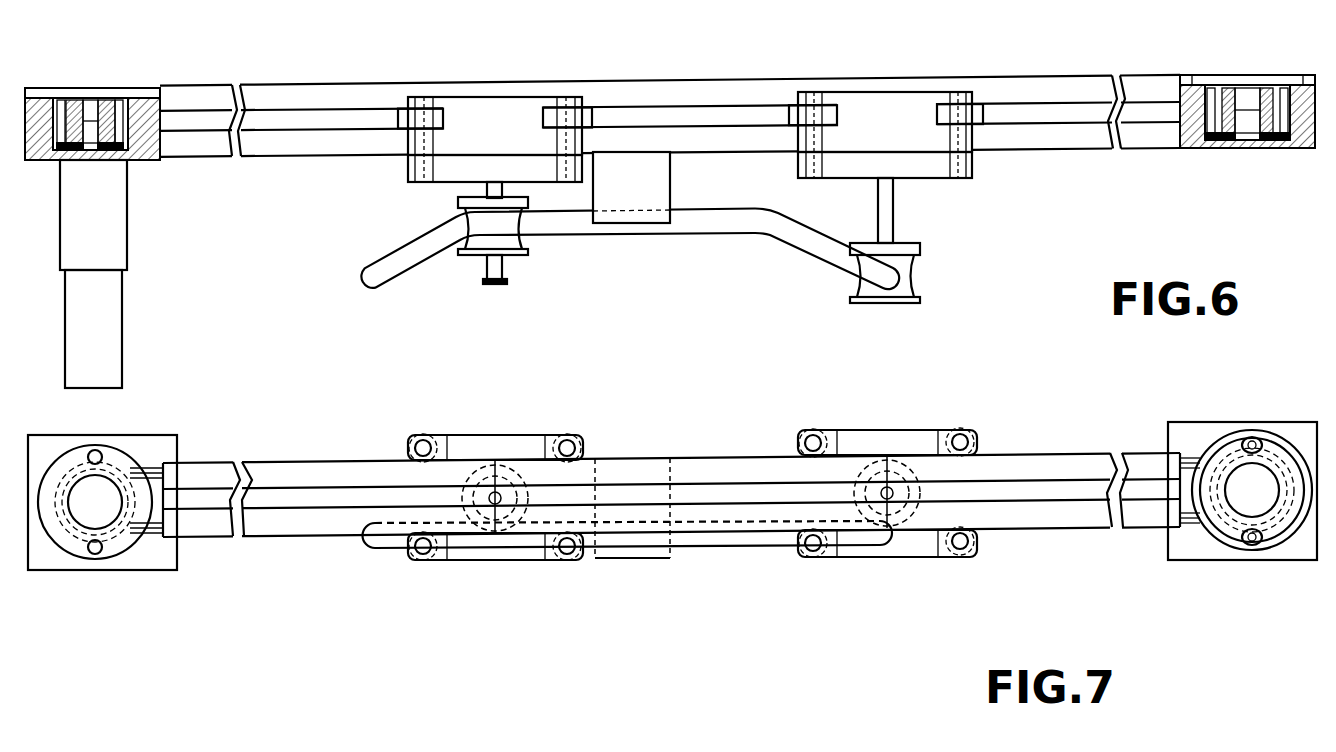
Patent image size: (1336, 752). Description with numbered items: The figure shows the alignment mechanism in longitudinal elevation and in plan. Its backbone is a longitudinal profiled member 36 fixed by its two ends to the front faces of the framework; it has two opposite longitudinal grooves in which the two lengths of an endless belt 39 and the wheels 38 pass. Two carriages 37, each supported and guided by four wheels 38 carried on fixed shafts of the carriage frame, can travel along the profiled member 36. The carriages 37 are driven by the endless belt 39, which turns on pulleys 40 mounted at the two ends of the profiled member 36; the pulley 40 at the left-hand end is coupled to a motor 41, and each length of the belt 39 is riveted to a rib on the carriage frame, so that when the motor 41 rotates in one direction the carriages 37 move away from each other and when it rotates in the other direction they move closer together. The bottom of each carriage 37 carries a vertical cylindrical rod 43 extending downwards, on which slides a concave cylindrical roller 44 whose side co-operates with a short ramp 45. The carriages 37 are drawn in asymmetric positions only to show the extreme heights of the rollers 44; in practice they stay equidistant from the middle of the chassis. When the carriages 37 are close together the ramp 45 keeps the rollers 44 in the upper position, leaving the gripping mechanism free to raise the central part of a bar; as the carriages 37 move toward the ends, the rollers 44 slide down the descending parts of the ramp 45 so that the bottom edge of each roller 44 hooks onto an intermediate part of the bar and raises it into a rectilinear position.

In FIG. 6, the longitudinal profiled member 36 is at (338, 148).
In FIG. 7, the longitudinal profiled member 36 is at (1047, 532).
In FIG. 7, the carriage 37 is at (472, 434).
In FIG. 7, the wheel 38 is at (428, 563).
In FIG. 6, the endless belt 39 is at (1302, 150).
In FIG. 7, the endless belt 39 is at (1190, 458).
In FIG. 6, the pulley 40 is at (128, 163).
In FIG. 6, the motor 41 is at (128, 247).
In FIG. 6, the vertical cylindrical rod 43 is at (483, 272).
In FIG. 6, the concave cylindrical roller 44 is at (515, 243).
In FIG. 6, the ramp 45 is at (650, 230).
In FIG. 7, the ramp 45 is at (703, 547).